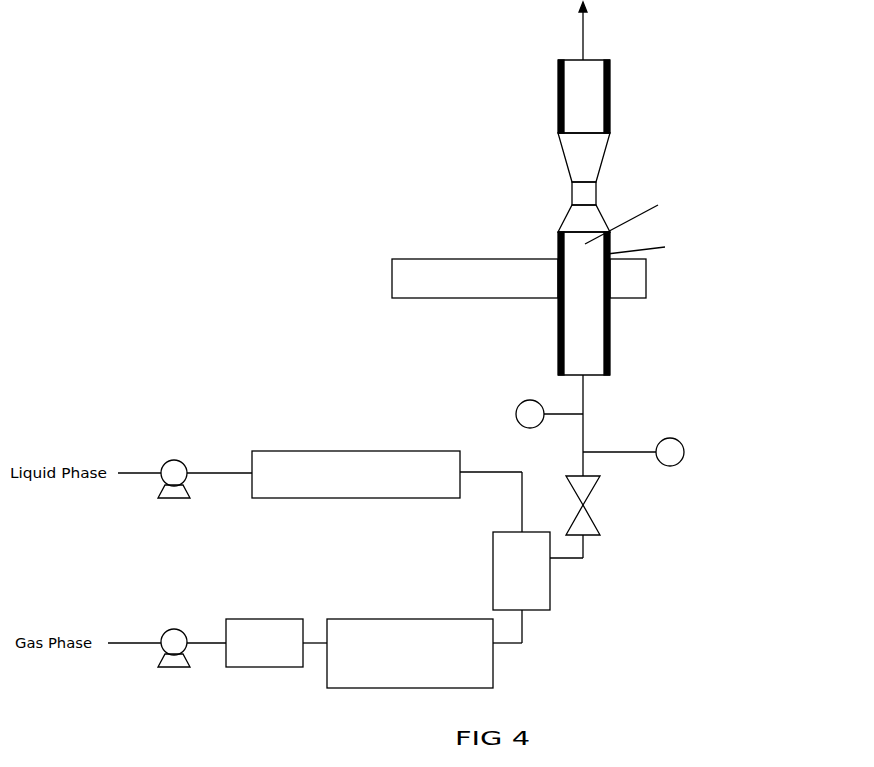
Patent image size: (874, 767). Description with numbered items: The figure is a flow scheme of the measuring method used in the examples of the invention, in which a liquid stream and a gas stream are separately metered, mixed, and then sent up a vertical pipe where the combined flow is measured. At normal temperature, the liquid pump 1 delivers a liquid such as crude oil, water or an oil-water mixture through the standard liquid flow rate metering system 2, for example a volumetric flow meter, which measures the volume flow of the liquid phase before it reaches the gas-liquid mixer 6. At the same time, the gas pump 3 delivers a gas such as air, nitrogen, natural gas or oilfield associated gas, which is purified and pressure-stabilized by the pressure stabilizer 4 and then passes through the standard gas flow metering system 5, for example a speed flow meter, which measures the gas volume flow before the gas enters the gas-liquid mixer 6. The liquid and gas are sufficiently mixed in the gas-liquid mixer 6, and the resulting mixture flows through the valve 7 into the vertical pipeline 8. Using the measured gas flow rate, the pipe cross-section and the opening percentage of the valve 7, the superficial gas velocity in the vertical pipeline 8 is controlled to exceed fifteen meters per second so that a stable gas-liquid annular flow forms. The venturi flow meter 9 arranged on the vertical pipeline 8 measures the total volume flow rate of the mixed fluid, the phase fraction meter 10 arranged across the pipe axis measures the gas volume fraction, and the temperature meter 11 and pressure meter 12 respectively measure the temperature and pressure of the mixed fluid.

The liquid pump 1 is at (173, 482).
The standard liquid flow rate metering system 2 is at (356, 467).
The gas pump 3 is at (168, 645).
The pressure stabilizer 4 is at (264, 634).
The standard gas flow metering system 5 is at (410, 645).
The gas-liquid mixer 6 is at (514, 557).
The valve 7 is at (638, 517).
The vertical pipeline 8 is at (657, 239).
The venturi flow meter 9 is at (496, 182).
The phase fraction meter 10 is at (519, 270).
The temperature meter 11 is at (451, 405).
The pressure meter 12 is at (710, 444).